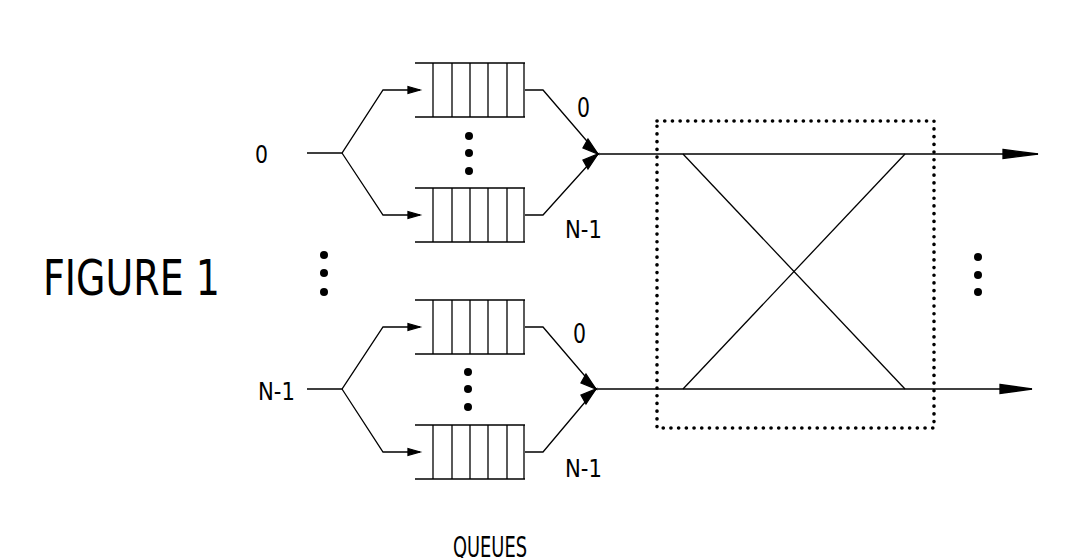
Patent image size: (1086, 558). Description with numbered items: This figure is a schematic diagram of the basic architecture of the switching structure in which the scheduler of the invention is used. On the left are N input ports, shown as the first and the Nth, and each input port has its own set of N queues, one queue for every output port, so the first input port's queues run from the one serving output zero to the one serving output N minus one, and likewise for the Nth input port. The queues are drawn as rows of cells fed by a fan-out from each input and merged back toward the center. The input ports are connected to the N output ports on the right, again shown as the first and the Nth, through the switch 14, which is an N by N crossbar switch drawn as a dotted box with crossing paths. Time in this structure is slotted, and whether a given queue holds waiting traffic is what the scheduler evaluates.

The switch 14 is at (822, 121).